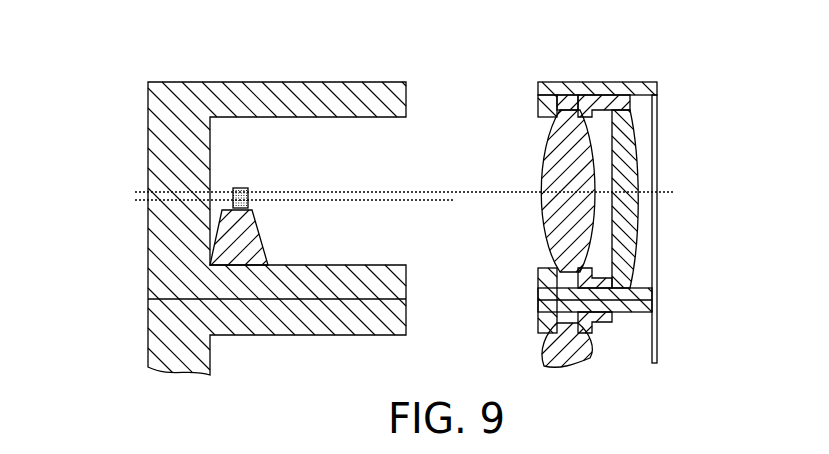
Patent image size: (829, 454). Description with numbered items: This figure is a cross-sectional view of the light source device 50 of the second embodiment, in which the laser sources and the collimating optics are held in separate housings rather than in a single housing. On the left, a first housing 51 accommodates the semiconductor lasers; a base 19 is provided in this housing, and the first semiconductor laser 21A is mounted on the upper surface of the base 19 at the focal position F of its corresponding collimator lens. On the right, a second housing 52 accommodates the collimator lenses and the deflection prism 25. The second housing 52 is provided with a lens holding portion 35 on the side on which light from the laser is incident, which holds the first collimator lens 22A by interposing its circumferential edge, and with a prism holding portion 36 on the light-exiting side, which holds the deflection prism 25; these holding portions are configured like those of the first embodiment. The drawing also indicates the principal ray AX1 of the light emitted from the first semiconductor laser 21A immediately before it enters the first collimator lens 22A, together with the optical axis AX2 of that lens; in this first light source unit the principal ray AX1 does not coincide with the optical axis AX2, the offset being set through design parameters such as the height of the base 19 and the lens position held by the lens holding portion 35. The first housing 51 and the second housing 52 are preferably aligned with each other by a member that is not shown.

The first housing 51 is at (186, 98).
The light source device 50 is at (464, 76).
The lens holding portion 35 is at (572, 92).
The second housing 52 is at (608, 90).
The prism holding portion 36 is at (646, 85).
The deflection prism 25 is at (632, 150).
The first collimator lens 22A is at (578, 222).
The first semiconductor laser 21A is at (156, 175).
The base 19 is at (240, 250).
The focal position F is at (249, 165).
The principal ray AX1 is at (440, 203).
The optical axis AX2 is at (428, 190).